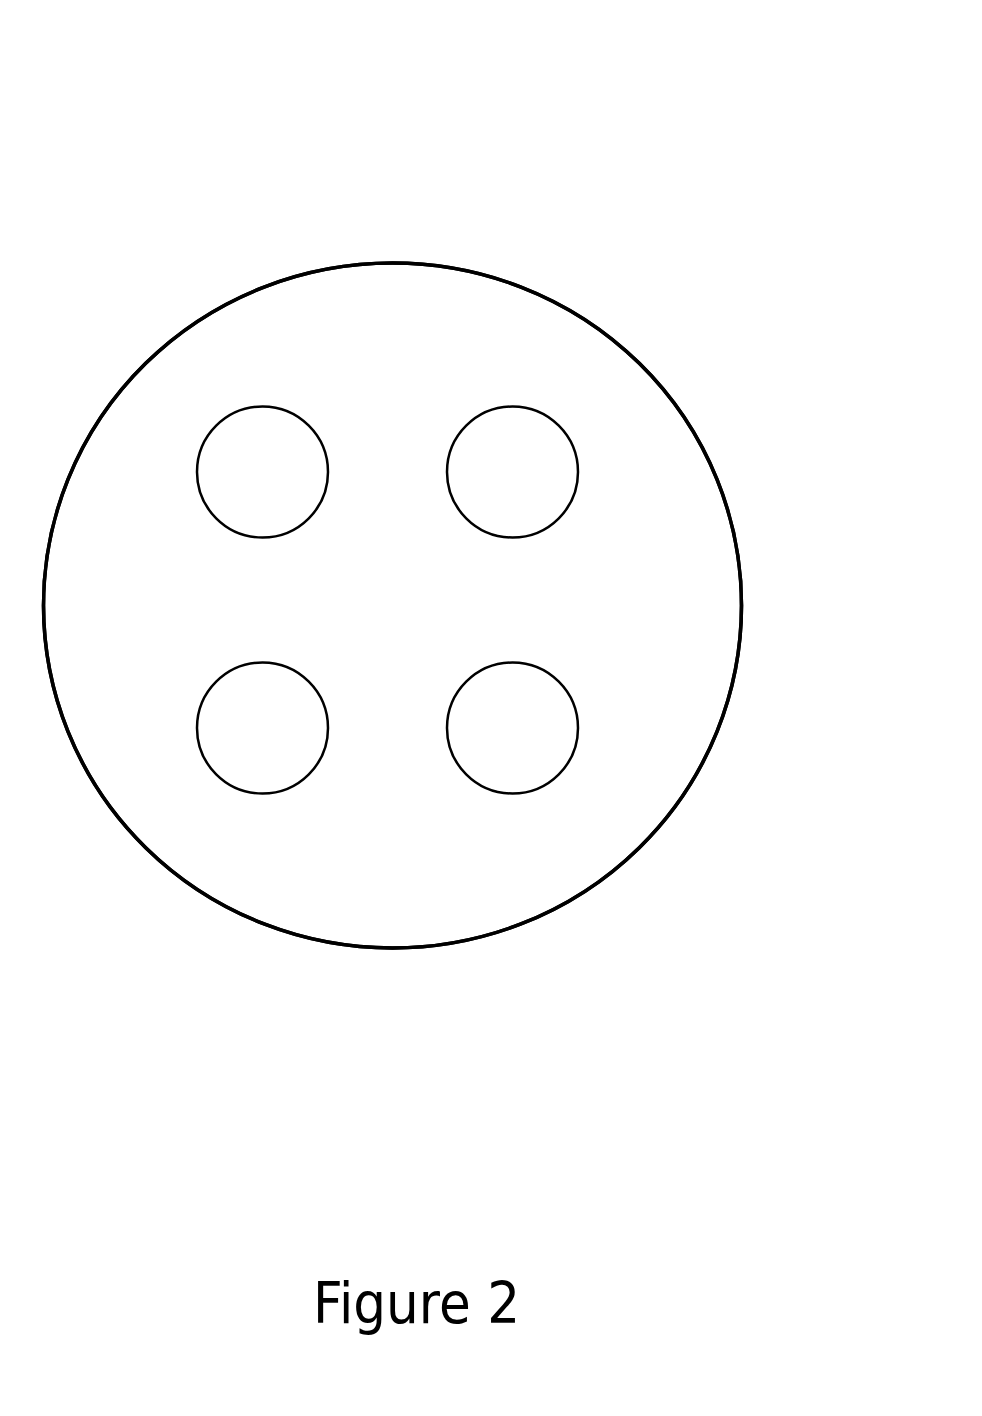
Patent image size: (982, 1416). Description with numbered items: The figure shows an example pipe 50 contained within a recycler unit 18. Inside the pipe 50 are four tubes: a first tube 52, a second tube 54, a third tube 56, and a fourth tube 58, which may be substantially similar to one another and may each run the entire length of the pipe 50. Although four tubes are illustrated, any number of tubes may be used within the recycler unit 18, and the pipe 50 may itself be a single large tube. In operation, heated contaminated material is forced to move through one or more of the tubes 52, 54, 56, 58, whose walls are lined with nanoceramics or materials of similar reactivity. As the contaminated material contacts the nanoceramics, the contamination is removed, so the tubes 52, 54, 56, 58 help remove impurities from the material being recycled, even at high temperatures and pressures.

The recycler unit 18 is at (690, 204).
The pipe 50 is at (720, 482).
The first tube 52 is at (270, 406).
The second tube 54 is at (492, 407).
The third tube 56 is at (270, 663).
The fourth tube 58 is at (503, 663).